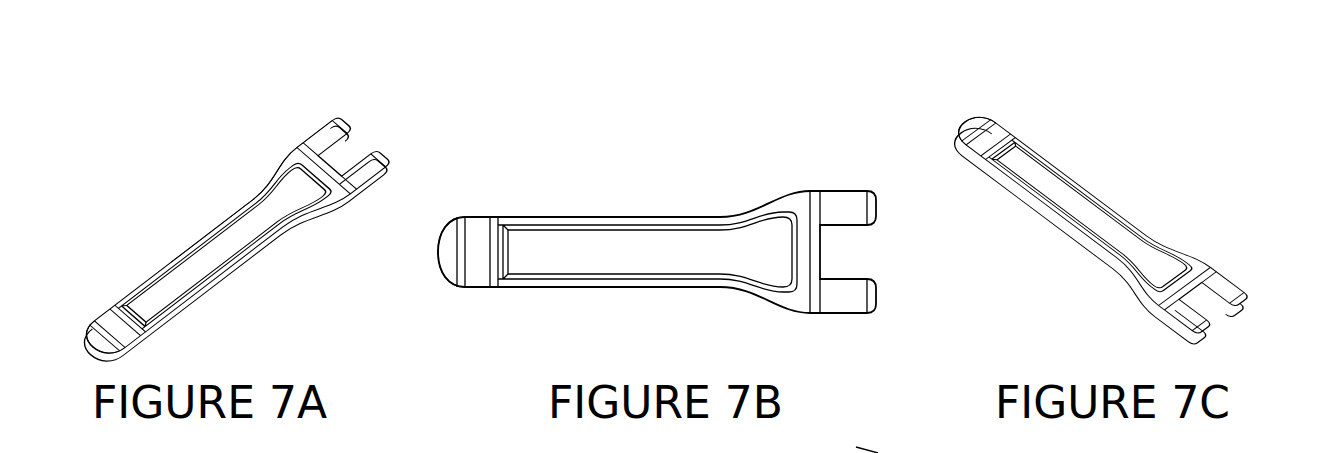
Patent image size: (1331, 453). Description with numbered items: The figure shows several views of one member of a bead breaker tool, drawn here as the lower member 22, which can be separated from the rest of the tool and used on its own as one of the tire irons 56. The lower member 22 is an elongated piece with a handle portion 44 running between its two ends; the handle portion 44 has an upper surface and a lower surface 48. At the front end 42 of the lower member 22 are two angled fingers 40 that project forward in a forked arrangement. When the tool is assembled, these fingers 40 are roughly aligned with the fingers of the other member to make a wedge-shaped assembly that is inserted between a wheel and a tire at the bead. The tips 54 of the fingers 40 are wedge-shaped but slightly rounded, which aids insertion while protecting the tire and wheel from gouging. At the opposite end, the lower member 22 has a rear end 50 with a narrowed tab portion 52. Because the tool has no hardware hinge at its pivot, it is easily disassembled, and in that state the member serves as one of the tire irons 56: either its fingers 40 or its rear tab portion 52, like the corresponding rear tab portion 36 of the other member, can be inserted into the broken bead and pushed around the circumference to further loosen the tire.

In FIG. 7A, the lower member 22 is at (308, 215).
In FIG. 7B, the lower member 22 is at (767, 268).
In FIG. 7C, the lower member 22 is at (1170, 284).
In FIG. 7B, the rear tab portion 36 is at (852, 442).
In FIG. 7A, the angled fingers 40 is at (385, 162).
In FIG. 7B, the angled fingers 40 is at (859, 219).
In FIG. 7C, the angled fingers 40 is at (1247, 293).
In FIG. 7A, the front end 42 is at (405, 141).
In FIG. 7B, the front end 42 is at (917, 250).
In FIG. 7C, the front end 42 is at (1272, 277).
In FIG. 7A, the handle portion 44 is at (187, 292).
In FIG. 7B, the handle portion 44 is at (581, 268).
In FIG. 7C, the handle portion 44 is at (1042, 157).
In FIG. 7A, the lower surface 48 is at (242, 270).
In FIG. 7B, the lower surface 48 is at (673, 243).
In FIG. 7C, the lower surface 48 is at (1085, 190).
In FIG. 7A, the rear end 50 is at (82, 338).
In FIG. 7B, the rear end 50 is at (497, 210).
In FIG. 7C, the rear end 50 is at (960, 104).
In FIG. 7A, the narrowed tab portion 52 is at (103, 323).
In FIG. 7B, the narrowed tab portion 52 is at (468, 252).
In FIG. 7C, the narrowed tab portion 52 is at (973, 127).
In FIG. 7A, the tips 54 is at (337, 123).
In FIG. 7A, the tire irons 56 is at (221, 180).